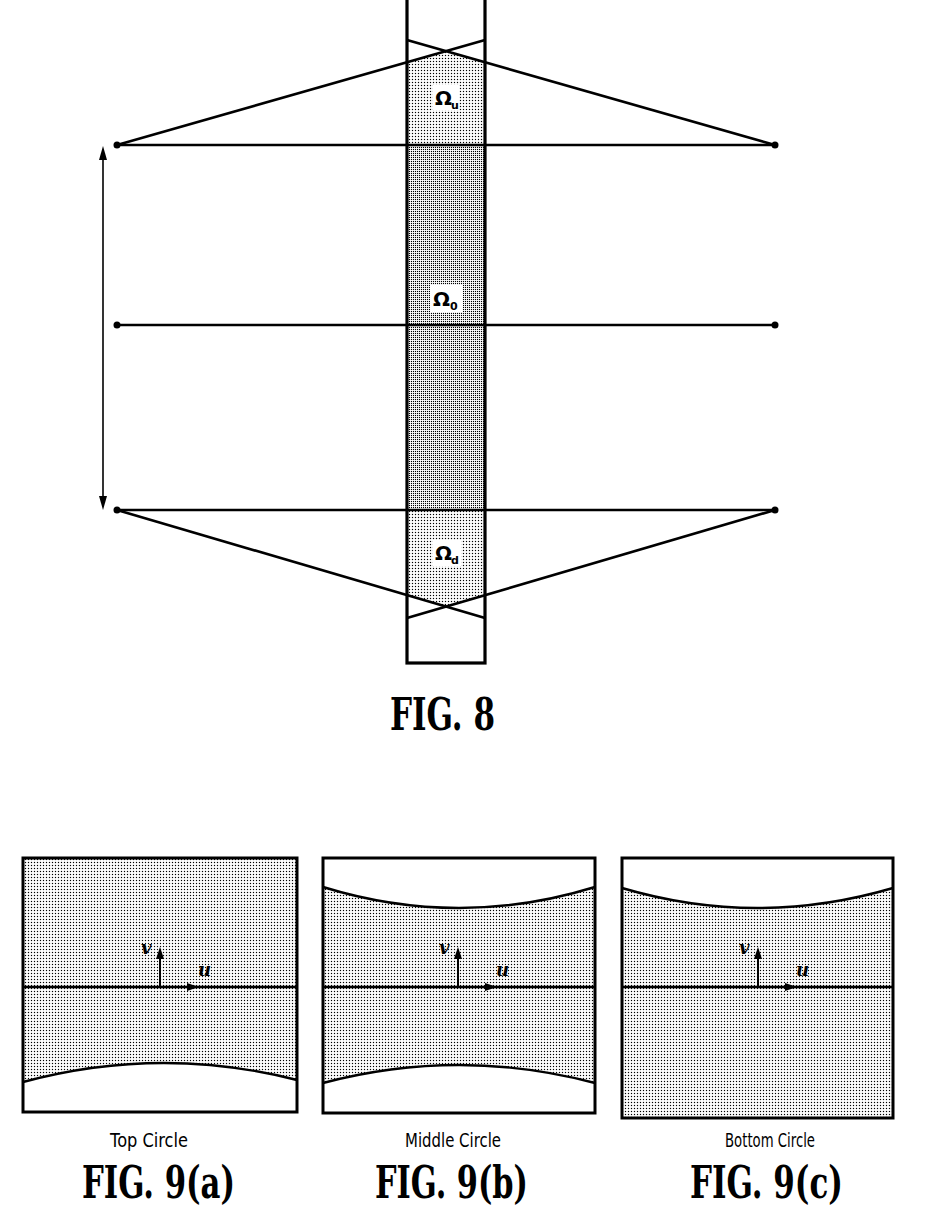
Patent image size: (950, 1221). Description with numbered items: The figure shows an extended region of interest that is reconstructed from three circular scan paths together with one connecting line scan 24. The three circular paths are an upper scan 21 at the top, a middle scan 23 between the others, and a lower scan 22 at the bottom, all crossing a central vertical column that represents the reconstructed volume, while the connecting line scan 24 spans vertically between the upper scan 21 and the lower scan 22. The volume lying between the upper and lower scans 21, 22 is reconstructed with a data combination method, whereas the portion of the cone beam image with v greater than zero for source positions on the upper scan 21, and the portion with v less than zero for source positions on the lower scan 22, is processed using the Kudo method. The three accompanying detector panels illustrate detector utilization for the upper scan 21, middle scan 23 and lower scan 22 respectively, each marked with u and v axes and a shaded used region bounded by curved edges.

The upper scan 21 is at (738, 147).
The lower scan 22 is at (731, 509).
The middle scan 23 is at (735, 327).
The connecting line scan 24 is at (102, 271).